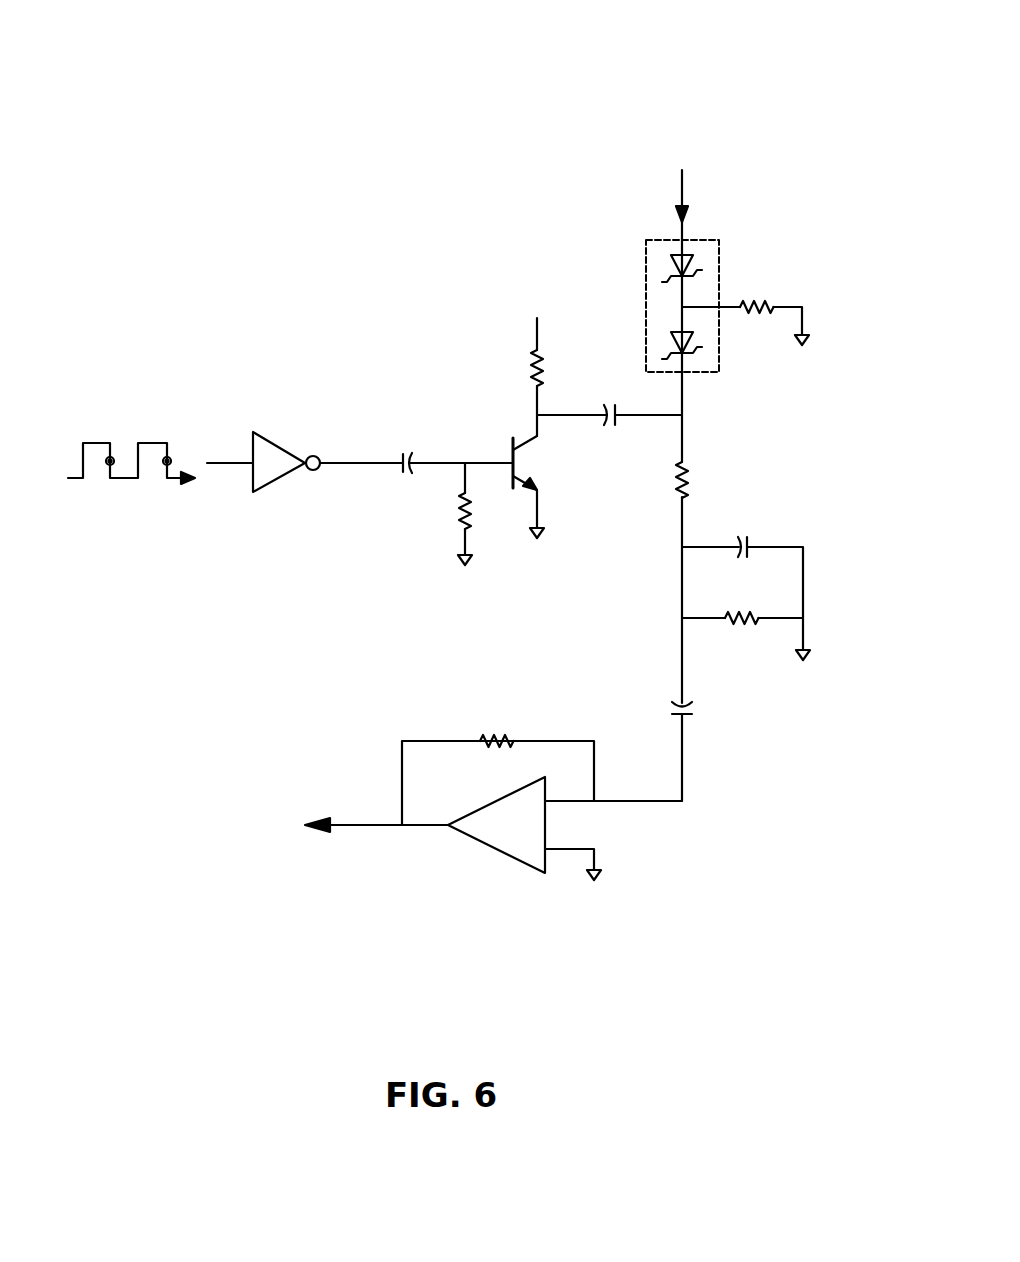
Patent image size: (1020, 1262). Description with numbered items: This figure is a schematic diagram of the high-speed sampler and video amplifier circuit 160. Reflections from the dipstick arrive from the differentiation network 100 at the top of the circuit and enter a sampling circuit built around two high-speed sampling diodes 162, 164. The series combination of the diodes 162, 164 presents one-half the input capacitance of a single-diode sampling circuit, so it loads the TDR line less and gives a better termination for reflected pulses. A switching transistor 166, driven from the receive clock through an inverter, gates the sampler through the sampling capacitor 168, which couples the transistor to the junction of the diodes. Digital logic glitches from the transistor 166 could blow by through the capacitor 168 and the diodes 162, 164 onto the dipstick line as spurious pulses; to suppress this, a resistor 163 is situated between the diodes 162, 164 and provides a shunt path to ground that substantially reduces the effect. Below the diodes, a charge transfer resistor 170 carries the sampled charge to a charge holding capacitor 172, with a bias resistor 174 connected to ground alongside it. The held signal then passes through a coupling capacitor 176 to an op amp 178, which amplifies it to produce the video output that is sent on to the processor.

The differentiation network 100 is at (683, 125).
The high-speed sampler and video amplifier circuit 160 is at (240, 192).
The diode 162 is at (700, 265).
The resistor 163 is at (753, 297).
The diode 164 is at (700, 338).
The switching transistor 166 is at (508, 445).
The sampling capacitor 168 is at (618, 427).
The charge transfer resistor 170 is at (695, 473).
The charge holding capacitor 172 is at (748, 532).
The bias resistor 174 is at (742, 628).
The coupling capacitor 176 is at (693, 723).
The op amp 178 is at (500, 855).